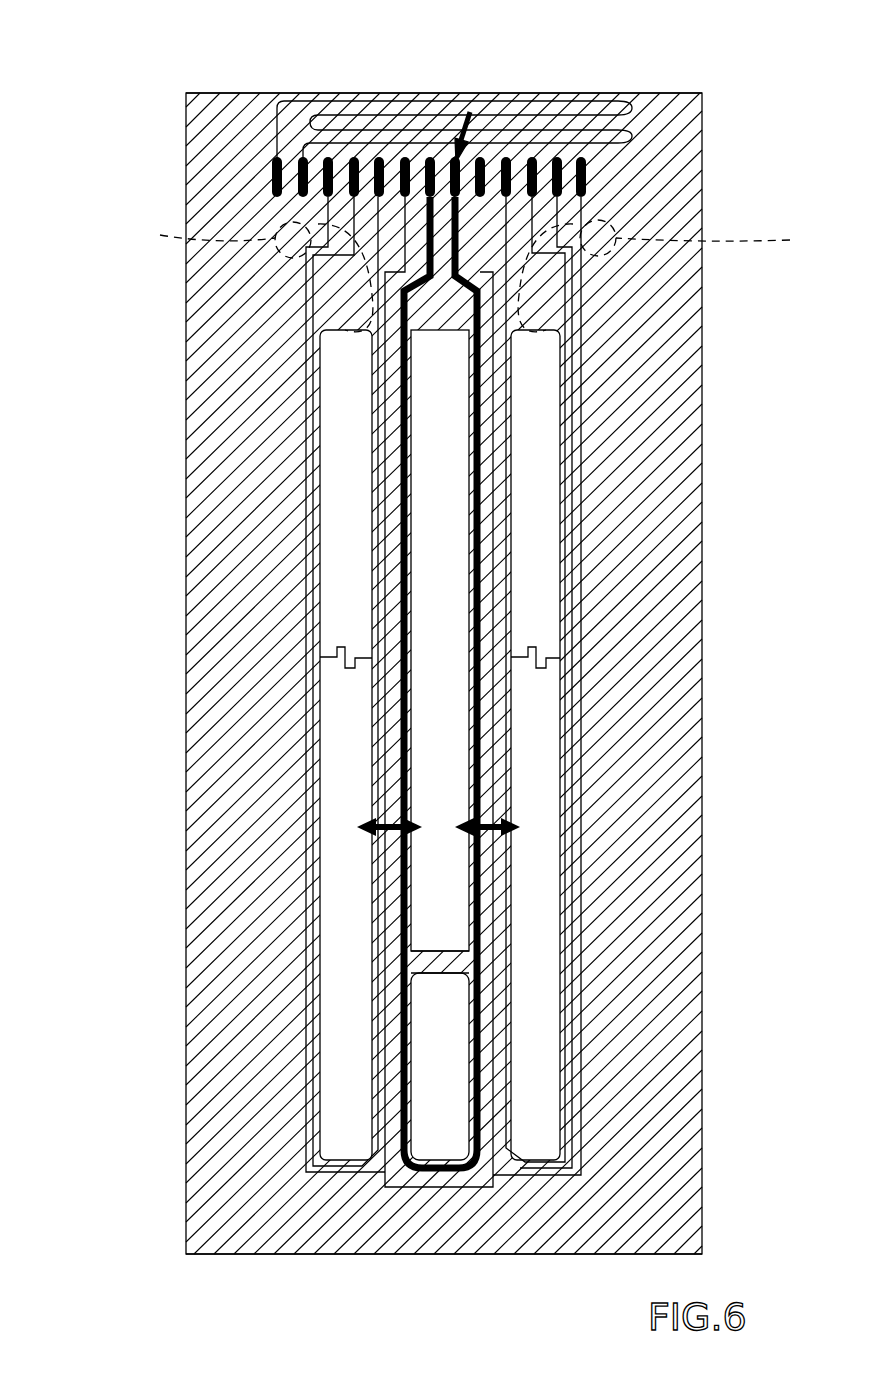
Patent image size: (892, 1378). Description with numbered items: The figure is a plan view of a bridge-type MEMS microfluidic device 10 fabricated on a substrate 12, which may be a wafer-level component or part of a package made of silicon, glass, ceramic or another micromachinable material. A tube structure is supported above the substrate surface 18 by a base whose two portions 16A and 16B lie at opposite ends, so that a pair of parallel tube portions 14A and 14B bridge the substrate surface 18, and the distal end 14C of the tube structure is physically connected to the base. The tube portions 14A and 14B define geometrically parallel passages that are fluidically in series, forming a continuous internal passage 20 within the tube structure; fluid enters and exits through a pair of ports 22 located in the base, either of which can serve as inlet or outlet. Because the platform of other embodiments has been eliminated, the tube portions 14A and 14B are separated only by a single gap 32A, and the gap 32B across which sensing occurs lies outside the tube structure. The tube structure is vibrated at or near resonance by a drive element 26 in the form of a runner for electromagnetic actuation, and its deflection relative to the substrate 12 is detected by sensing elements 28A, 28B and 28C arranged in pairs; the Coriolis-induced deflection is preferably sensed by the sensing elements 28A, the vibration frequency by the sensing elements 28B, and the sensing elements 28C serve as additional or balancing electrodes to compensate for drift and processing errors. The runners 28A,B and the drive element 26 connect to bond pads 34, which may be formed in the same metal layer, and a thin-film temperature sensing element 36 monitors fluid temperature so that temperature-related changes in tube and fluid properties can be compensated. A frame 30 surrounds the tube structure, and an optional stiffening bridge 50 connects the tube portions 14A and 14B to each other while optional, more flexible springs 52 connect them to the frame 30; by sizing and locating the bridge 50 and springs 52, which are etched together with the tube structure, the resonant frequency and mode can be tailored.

The MEMS microfluidic device 10 is at (152, 112).
The substrate 12 is at (180, 598).
The tube portion 14A is at (482, 1020).
The tube portion 14B is at (384, 1085).
The distal end of tube structure 14C is at (404, 1180).
The base portion 16A is at (688, 150).
The base portion 16B is at (482, 1238).
The substrate surface 18 is at (340, 1135).
The continuous internal passage 20 is at (441, 360).
The port 22 is at (455, 272).
The drive element 26 is at (466, 775).
The sensing element 28A is at (545, 888).
The sensing element 28B is at (378, 890).
The sensing element 28C is at (378, 800).
The drive and sensing element runners 28A,B is at (580, 965).
The frame 30 is at (690, 575).
The gap 32A is at (462, 542).
The gap 32B is at (367, 522).
The bond pad 34 is at (472, 108).
The temperature sensing element 36 is at (440, 78).
The stiffening bridge 50 is at (430, 960).
The spring 52 is at (345, 667).